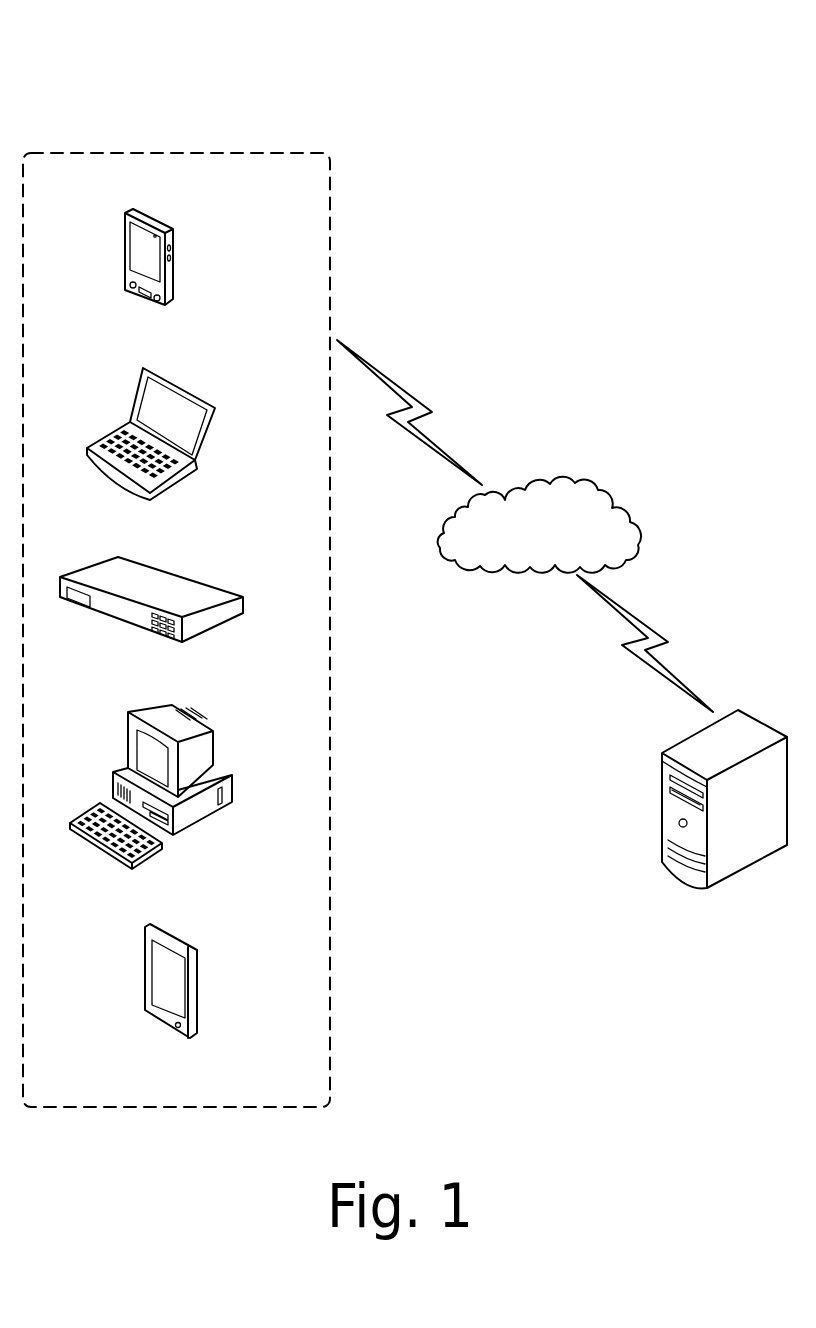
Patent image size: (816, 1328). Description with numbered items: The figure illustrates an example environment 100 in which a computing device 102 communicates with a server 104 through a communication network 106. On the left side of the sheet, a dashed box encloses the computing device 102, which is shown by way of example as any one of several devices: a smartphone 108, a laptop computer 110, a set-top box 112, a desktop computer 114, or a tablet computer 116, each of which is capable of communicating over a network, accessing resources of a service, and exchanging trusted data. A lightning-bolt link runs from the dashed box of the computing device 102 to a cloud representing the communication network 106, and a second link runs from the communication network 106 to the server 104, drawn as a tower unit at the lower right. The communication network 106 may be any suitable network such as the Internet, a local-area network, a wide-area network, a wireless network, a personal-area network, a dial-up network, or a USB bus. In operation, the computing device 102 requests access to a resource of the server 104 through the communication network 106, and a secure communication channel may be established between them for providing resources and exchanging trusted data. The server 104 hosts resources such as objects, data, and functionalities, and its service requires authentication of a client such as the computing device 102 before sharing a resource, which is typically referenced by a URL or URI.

The environment 100 is at (101, 49).
The computing device 102 is at (257, 153).
The server 104 is at (680, 742).
The communication network 106 is at (555, 541).
The smartphone 108 is at (173, 230).
The laptop computer 110 is at (207, 403).
The set-top box 112 is at (220, 588).
The desktop computer 114 is at (208, 733).
The tablet computer 116 is at (192, 947).